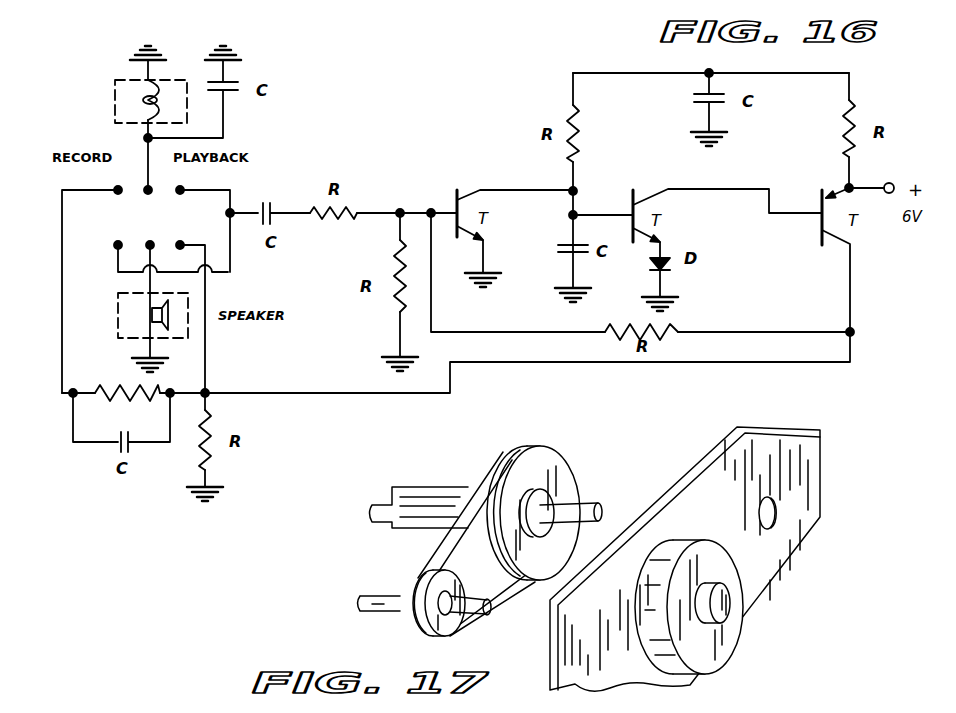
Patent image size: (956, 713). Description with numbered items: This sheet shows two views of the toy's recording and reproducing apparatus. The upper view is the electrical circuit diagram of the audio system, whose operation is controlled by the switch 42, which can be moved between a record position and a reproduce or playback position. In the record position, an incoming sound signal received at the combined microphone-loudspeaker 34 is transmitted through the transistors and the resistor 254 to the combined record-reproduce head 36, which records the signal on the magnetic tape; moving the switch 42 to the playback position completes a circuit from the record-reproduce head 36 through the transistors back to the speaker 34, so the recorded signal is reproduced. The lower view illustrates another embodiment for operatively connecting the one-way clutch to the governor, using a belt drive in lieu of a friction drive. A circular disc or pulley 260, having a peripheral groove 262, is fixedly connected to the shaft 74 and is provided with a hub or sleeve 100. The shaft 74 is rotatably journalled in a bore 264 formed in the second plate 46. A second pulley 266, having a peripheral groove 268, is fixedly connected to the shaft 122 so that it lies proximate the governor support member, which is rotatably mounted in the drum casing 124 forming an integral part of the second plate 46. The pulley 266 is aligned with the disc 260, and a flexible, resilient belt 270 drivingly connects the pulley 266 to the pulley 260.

In FIG. 16, the record-reproduce head 36 is at (115, 100).
In FIG. 16, the switch mechanism 42 is at (115, 212).
In FIG. 16, the microphone-loudspeaker 34 is at (118, 298).
In FIG. 16, the resistor 254 is at (118, 385).
In FIG. 17, the hub or sleeve 100 is at (452, 496).
In FIG. 17, the circular disc or pulley 260 is at (540, 502).
In FIG. 17, the peripheral groove 262 is at (495, 535).
In FIG. 17, the shaft 74 is at (580, 505).
In FIG. 17, the flexible, resilient belt 270 is at (430, 565).
In FIG. 17, the shaft 122 is at (360, 602).
In FIG. 17, the second pulley 266 is at (417, 611).
In FIG. 17, the peripheral groove 268 is at (450, 630).
In FIG. 17, the second plate 46 is at (805, 473).
In FIG. 17, the bore 264 is at (780, 515).
In FIG. 17, the drum casing 124 is at (717, 636).